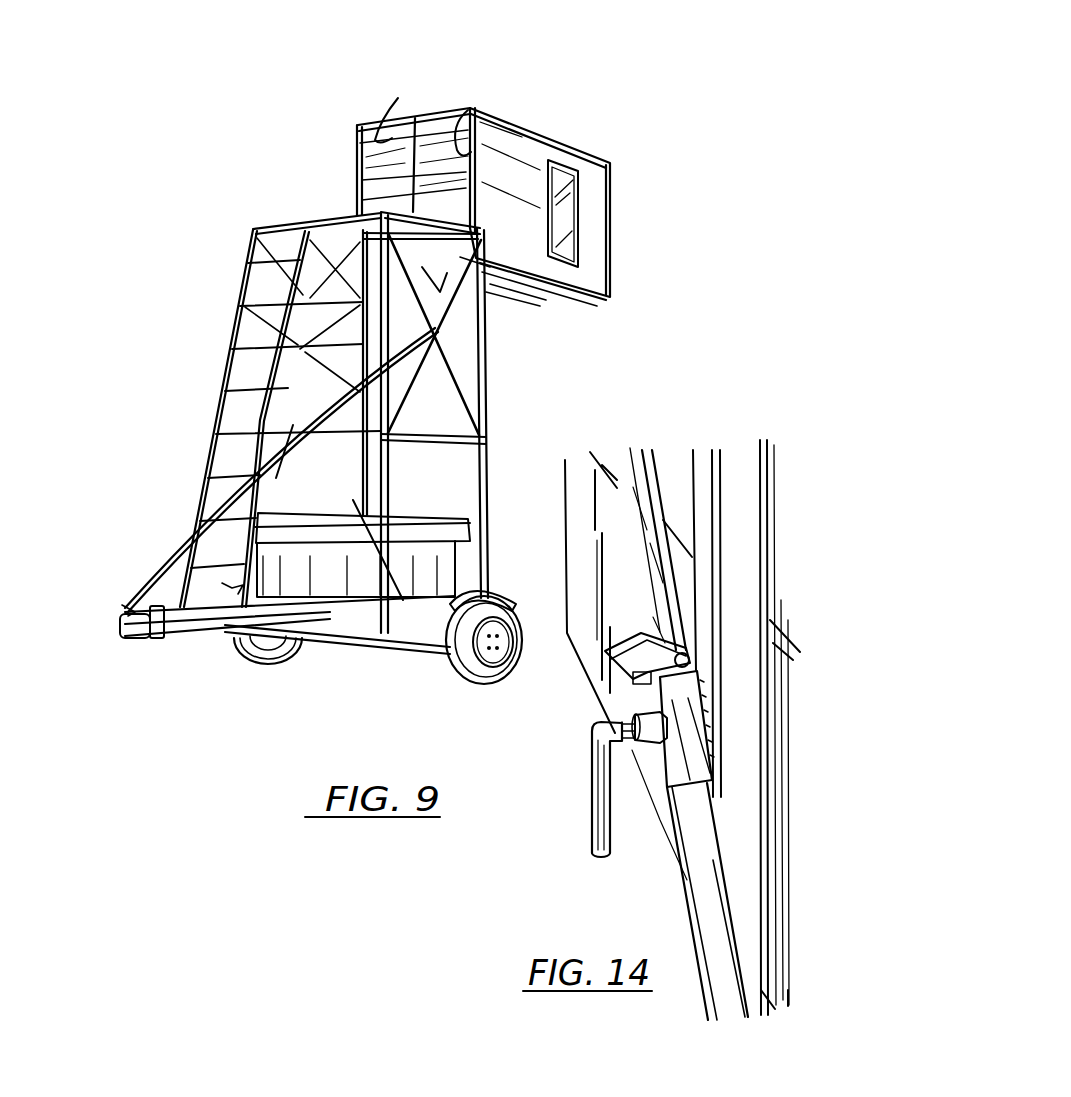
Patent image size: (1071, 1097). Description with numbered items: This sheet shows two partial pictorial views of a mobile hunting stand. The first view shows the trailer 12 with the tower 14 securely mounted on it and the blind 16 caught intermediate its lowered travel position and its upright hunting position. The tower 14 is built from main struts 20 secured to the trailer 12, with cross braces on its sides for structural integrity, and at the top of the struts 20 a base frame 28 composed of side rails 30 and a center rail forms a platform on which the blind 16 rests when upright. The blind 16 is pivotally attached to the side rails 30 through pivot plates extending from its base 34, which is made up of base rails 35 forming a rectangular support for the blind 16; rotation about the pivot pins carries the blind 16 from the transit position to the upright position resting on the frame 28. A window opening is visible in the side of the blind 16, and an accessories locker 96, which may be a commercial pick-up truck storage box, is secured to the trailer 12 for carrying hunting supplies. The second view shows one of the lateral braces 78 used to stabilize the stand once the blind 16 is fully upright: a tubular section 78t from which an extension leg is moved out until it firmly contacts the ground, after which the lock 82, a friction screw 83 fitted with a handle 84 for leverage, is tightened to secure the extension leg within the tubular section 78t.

In FIG. 9, the trailer 12 is at (198, 652).
In FIG. 9, the tower 14 is at (500, 367).
In FIG. 9, the blind 16 is at (620, 185).
In FIG. 14, the main struts 20 is at (746, 555).
In FIG. 9, the base frame 28 is at (300, 214).
In FIG. 9, the side rails 30 is at (270, 226).
In FIG. 9, the base 34 is at (428, 110).
In FIG. 9, the base rails 35 is at (398, 100).
In FIG. 14, the lateral brace 78 is at (676, 620).
In FIG. 14, the tubular section 78t is at (704, 837).
In FIG. 14, the lock 82 is at (667, 695).
In FIG. 14, the friction screw 83 is at (632, 752).
In FIG. 14, the handle 84 is at (592, 838).
In FIG. 9, the accessories locker 96 is at (428, 520).